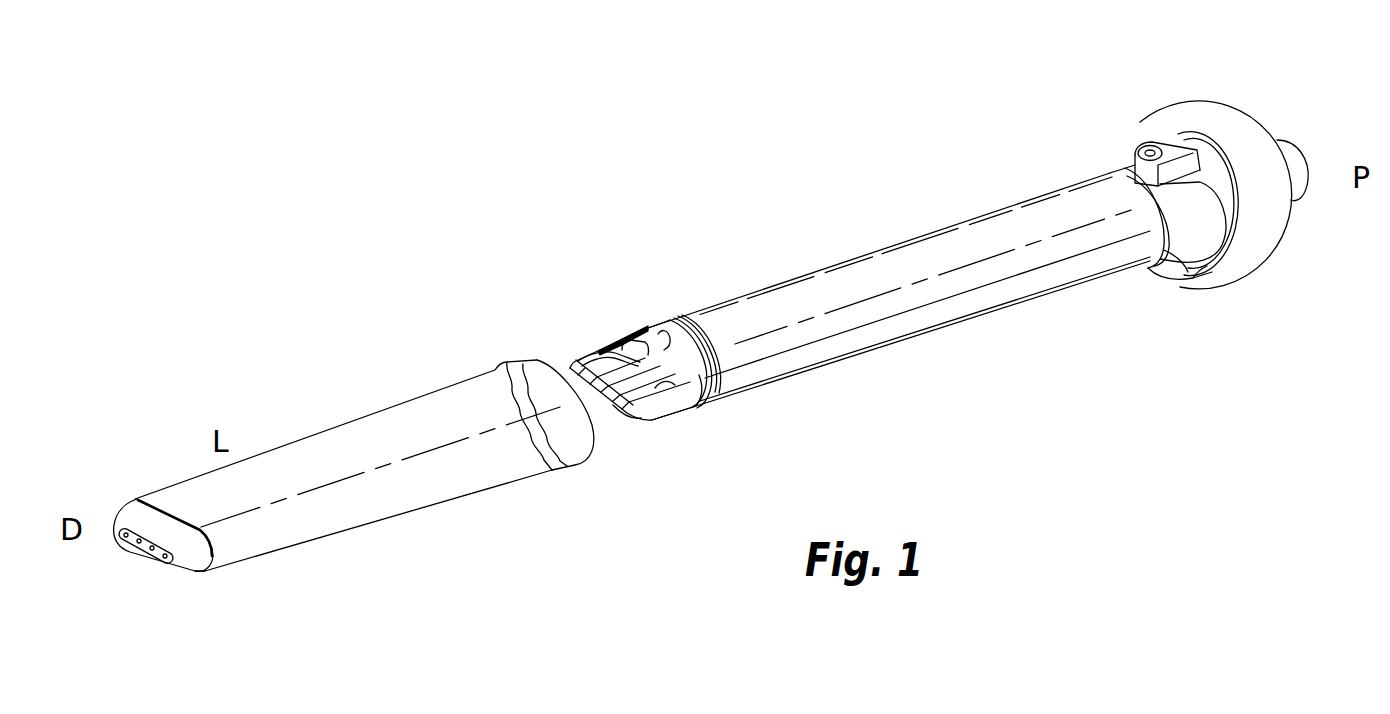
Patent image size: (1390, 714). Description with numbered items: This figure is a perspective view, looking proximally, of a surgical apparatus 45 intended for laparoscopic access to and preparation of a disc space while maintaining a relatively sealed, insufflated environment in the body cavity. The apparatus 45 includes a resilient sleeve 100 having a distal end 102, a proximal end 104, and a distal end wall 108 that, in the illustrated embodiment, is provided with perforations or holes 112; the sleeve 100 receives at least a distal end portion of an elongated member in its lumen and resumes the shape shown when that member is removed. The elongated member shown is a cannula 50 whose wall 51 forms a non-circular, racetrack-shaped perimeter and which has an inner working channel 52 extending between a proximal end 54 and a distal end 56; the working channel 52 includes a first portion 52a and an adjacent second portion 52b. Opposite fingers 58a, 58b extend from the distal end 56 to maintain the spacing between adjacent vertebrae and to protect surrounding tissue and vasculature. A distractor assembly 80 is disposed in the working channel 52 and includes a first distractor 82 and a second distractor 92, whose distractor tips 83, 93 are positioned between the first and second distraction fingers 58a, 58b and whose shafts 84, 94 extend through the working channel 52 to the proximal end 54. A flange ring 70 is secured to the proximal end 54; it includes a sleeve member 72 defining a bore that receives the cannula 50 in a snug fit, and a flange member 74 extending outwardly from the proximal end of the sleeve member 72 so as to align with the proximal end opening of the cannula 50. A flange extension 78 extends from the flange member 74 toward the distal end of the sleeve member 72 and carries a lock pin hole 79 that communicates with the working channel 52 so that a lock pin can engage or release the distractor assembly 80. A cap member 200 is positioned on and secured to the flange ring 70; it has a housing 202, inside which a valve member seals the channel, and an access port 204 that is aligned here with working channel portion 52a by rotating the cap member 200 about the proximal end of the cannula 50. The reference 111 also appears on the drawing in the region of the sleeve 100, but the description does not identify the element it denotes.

The surgical apparatus 45 is at (688, 186).
The cannula 50 is at (872, 354).
The wall 51 is at (1027, 287).
The working channel 52 is at (667, 330).
The first portion 52a is at (688, 375).
The second portion 52b is at (661, 337).
The proximal end 54 is at (1114, 153).
The distal end 56 is at (680, 454).
The first distraction finger 58a is at (668, 405).
The second distraction finger 58b is at (598, 353).
The flange ring 70 is at (1195, 276).
The sleeve member 72 is at (1170, 266).
The flange member 74 is at (1191, 262).
The flange extension 78 is at (1172, 142).
The lock pin hole 79 is at (1148, 150).
The distractor assembly 80 is at (622, 420).
The first distractor 82 is at (688, 382).
The distractor tip 83 is at (641, 415).
The shaft 84 is at (712, 353).
The second distractor 92 is at (636, 338).
The distractor tip 93 is at (577, 366).
The shaft 94 is at (673, 327).
The sleeve 100 is at (446, 507).
The distal end 102 is at (203, 576).
The proximal end 104 is at (510, 360).
The distal end wall 108 is at (124, 516).
The handle body 111 is at (328, 438).
The holes 112 is at (150, 543).
The cap member 200 is at (1223, 296).
The housing 202 is at (1207, 100).
The access port 204 is at (1293, 143).